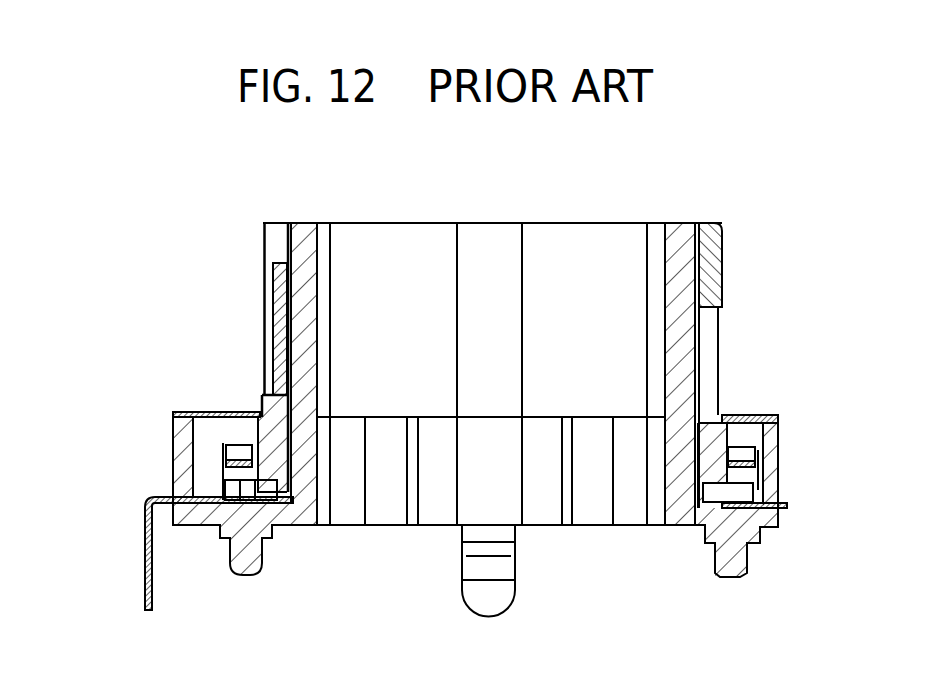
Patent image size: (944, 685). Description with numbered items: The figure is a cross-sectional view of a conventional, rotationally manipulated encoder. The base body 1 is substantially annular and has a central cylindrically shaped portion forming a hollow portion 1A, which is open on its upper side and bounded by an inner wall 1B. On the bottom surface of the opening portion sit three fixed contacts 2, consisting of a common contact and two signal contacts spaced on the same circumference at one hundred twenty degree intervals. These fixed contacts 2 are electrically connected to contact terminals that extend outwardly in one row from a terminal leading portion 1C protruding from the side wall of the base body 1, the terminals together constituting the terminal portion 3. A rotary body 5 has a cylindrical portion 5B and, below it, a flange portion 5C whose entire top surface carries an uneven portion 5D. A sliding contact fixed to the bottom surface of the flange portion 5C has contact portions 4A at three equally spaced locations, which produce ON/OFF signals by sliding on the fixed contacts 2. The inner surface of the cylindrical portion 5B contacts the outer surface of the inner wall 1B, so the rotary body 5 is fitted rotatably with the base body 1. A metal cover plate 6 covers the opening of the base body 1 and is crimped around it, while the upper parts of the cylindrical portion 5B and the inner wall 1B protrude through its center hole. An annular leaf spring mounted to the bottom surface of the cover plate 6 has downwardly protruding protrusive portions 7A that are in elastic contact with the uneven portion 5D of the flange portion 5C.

The base body 1 is at (680, 513).
The hollow portion 1A is at (545, 243).
The inner wall 1B is at (678, 250).
The terminal leading portion 1C is at (183, 438).
The fixed contact 2 is at (275, 505).
The terminal portion 3 is at (145, 588).
The contact portion 4A is at (222, 487).
The rotary body 5 is at (262, 395).
The cylindrical portion 5B is at (278, 267).
The flange portion 5C is at (750, 480).
The uneven portion 5D is at (745, 457).
The cover plate 6 is at (743, 417).
The protrusive portion 7A is at (856, 374).